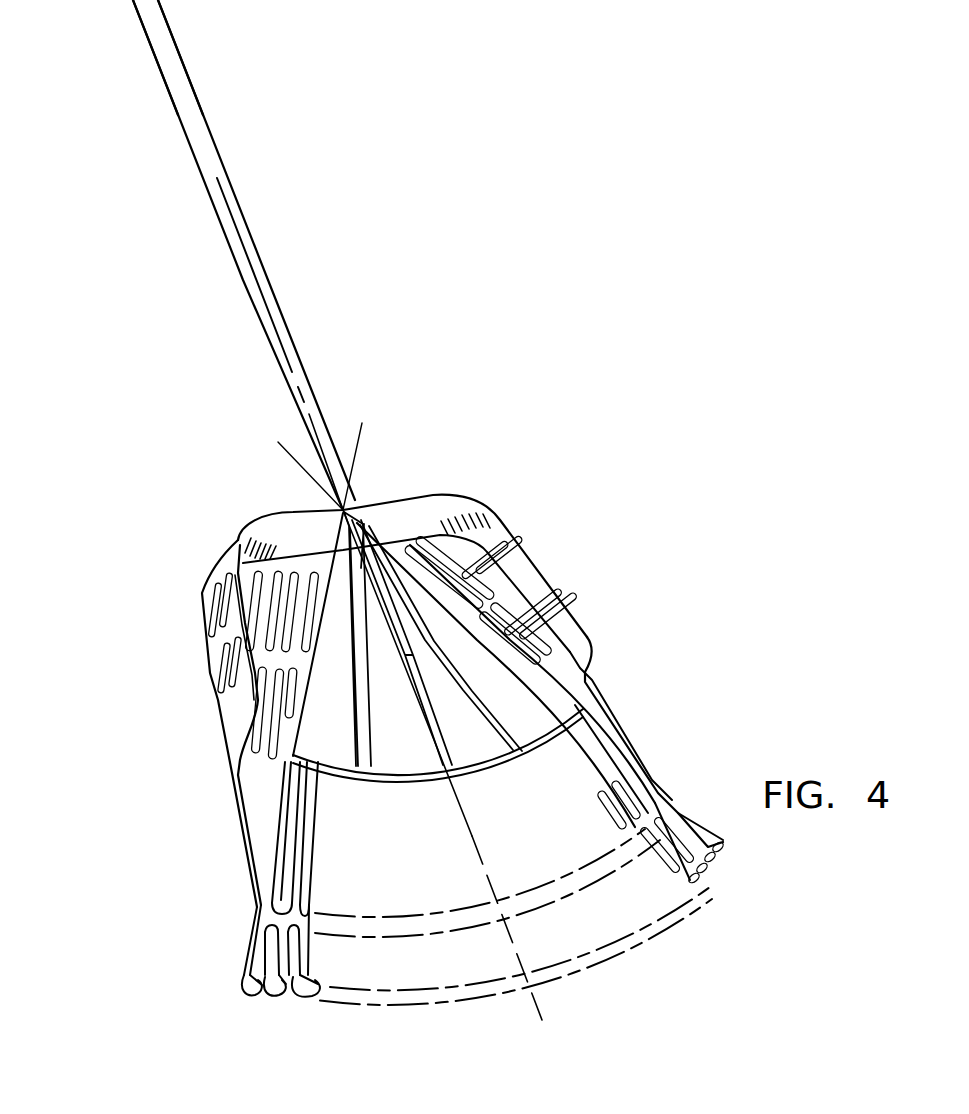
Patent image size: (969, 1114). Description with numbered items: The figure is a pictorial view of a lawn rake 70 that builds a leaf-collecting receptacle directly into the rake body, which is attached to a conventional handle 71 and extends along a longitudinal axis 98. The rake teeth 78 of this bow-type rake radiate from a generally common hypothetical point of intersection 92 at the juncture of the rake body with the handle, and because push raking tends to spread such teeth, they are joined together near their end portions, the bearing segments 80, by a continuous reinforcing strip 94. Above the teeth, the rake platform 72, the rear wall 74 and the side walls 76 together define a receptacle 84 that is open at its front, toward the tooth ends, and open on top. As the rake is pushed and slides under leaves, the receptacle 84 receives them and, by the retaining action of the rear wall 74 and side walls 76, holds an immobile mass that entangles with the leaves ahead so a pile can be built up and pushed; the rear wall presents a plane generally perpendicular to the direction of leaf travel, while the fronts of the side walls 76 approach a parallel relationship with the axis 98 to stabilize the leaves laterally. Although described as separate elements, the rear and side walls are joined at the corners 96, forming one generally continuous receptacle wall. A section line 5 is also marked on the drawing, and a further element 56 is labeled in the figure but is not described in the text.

The rake 70 is at (270, 274).
The handle 71 is at (193, 150).
The longitudinal axis 98 is at (282, 345).
The section line 5- 5 is at (309, 414).
The point of intersection 92 is at (345, 508).
The rear wall 74 is at (290, 537).
The corners 96 is at (240, 545).
The receptacle 84 is at (420, 520).
The rake platform 72 is at (490, 684).
The basket arm 56 is at (527, 752).
The side walls 76 is at (220, 701).
The rake teeth 78 is at (290, 843).
The continuous reinforcing strip 94 is at (284, 922).
The bearing segments 80 is at (697, 878).